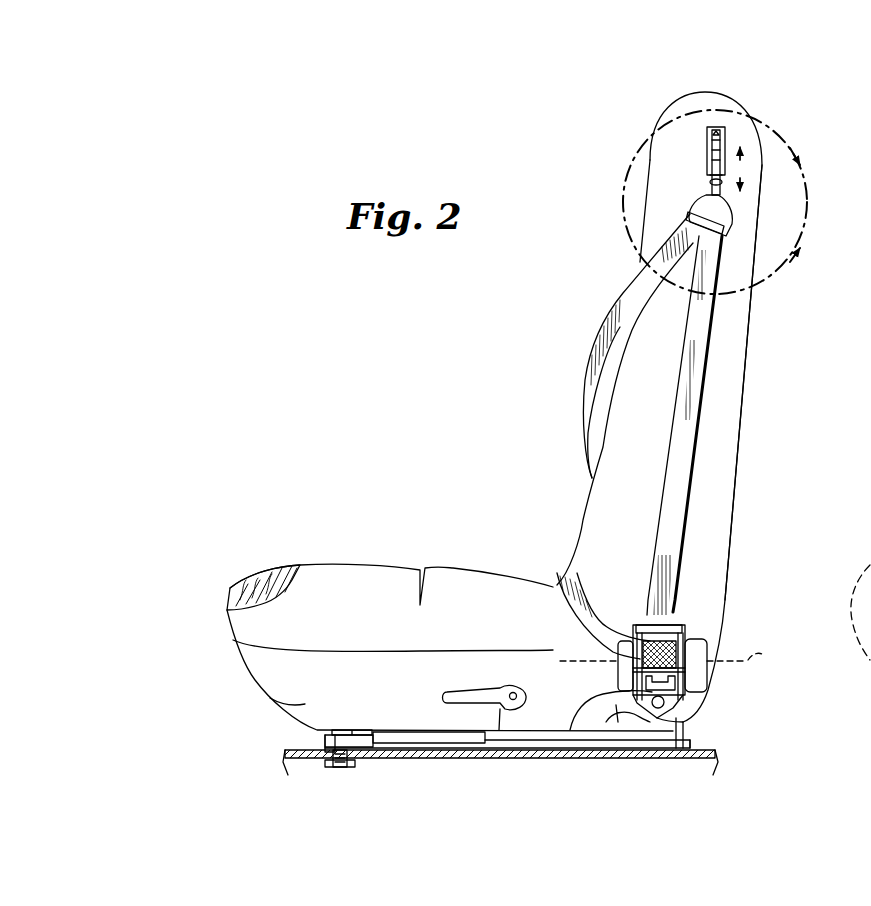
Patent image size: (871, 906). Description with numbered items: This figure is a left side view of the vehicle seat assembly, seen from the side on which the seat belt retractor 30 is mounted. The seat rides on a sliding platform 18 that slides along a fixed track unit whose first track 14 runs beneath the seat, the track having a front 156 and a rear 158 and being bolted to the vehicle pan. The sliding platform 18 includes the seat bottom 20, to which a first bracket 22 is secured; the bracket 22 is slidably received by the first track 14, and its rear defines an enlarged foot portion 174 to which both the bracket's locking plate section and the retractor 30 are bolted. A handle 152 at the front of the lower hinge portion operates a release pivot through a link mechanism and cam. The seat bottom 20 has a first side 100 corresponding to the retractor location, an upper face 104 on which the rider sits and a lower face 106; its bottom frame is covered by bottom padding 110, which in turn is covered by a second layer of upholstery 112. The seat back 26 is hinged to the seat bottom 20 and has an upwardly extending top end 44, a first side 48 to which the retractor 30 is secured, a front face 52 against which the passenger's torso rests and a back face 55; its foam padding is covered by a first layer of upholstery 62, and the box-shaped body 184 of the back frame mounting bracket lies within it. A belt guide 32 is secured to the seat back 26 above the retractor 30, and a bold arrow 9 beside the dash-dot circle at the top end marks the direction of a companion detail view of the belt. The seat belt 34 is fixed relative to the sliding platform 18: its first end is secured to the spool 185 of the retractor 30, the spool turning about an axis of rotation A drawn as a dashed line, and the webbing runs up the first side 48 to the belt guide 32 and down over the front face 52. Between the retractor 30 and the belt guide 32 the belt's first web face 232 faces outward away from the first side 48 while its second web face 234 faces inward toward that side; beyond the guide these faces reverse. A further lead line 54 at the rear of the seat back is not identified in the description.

The rotation direction indicator 9 is at (806, 215).
The first track 14 is at (313, 742).
The sliding platform 18 is at (731, 506).
The seat bottom 20 is at (319, 557).
The first bracket 22 is at (688, 727).
The seat back 26 is at (710, 93).
The seat belt retractor 30 is at (700, 640).
The belt guide 32 is at (738, 228).
The seat belt 34 is at (716, 363).
The top end 44 is at (733, 98).
The first side 48 is at (721, 431).
The front face 52 is at (650, 173).
The seat back rear surface 54 is at (746, 325).
The back face 55 is at (741, 401).
The first layer of upholstery 62 is at (582, 507).
The first side 100 is at (272, 629).
The upper face 104 is at (458, 564).
The lower face 106 is at (418, 758).
The bottom padding 110 is at (241, 588).
The second layer of upholstery 112 is at (276, 575).
The handle 152 is at (499, 730).
The front 156 is at (330, 747).
The rear 158 is at (684, 732).
The enlarged foot portion 174 is at (608, 718).
The body 184 is at (593, 698).
The spool 185 is at (668, 650).
The first web face 232 is at (672, 549).
The second web face 234 is at (632, 292).
The axis of rotation A is at (674, 656).